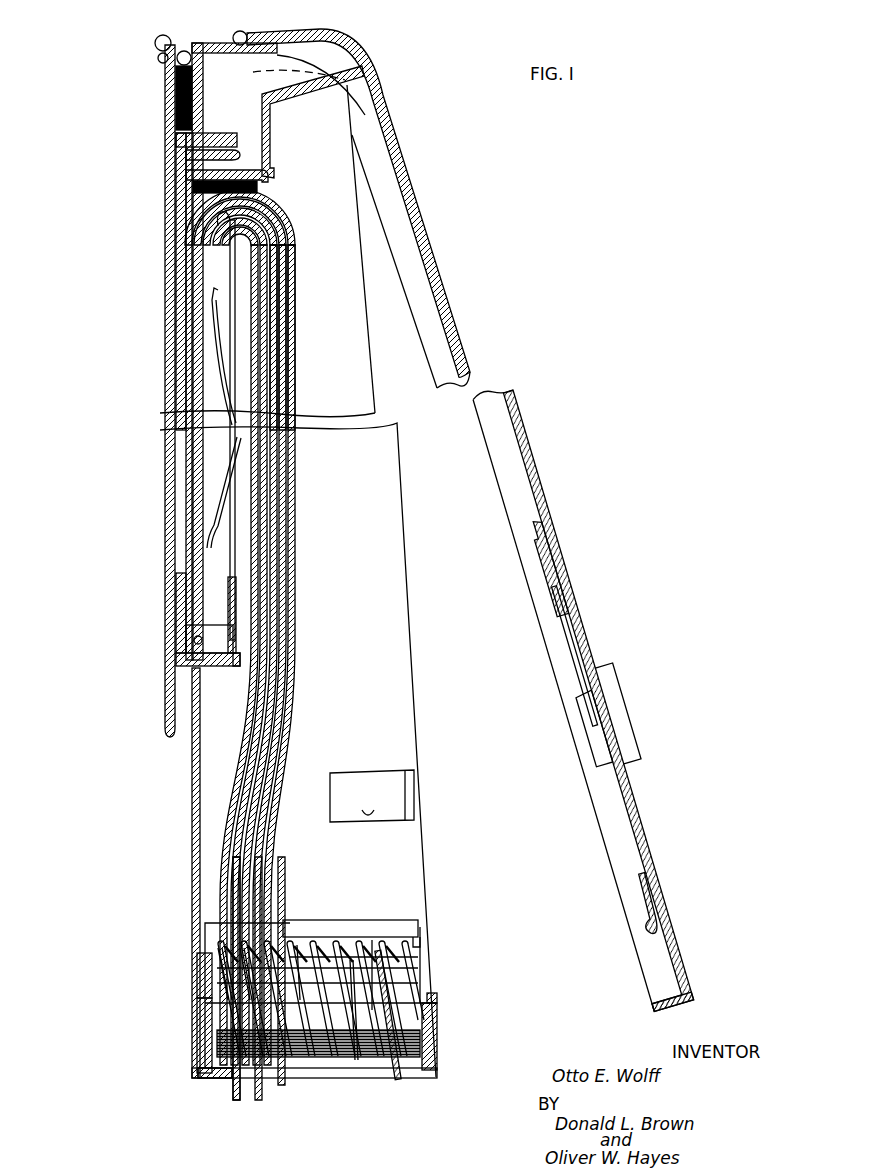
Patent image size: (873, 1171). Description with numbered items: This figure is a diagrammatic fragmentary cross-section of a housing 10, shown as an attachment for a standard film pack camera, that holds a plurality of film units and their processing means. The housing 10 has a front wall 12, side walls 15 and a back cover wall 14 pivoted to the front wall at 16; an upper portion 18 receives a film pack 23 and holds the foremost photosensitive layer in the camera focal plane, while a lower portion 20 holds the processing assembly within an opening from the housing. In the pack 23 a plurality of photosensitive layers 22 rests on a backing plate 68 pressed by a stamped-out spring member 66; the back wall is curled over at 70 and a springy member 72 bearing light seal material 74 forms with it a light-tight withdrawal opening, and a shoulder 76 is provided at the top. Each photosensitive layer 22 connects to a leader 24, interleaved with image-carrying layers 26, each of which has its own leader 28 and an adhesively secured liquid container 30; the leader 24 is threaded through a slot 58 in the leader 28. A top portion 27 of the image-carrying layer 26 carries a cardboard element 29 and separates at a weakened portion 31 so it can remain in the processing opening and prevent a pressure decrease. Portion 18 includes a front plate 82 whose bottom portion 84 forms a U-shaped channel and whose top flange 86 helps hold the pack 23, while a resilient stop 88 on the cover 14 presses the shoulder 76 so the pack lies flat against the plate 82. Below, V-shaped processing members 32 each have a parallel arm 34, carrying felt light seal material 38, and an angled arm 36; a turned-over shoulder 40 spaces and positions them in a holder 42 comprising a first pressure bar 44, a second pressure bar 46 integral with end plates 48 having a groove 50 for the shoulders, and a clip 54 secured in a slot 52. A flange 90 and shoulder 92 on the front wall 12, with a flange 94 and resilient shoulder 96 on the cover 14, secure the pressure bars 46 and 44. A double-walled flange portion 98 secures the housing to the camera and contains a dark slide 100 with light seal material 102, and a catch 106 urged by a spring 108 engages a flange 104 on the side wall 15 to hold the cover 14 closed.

The housing 10 is at (190, 853).
The front wall 12 is at (196, 820).
The back cover wall 14 is at (418, 208).
The side wall 15 is at (413, 683).
The pivot 16 is at (242, 31).
The film pack receiving portion 18 is at (233, 670).
The processing means holding portion 20 is at (216, 1080).
The photosensitive layers 22 is at (198, 478).
The film pack 23 is at (190, 640).
The leader 24 is at (250, 265).
The image-carrying layer 26 is at (266, 748).
The top portion 27 is at (296, 285).
The leader 28 is at (233, 1100).
The element 29 is at (284, 226).
The container 30 is at (266, 880).
The weakened portion 31 is at (292, 340).
The processing member 32 is at (326, 938).
The arm 34 is at (358, 1060).
The arm 36 is at (372, 940).
The light seal material 38 is at (285, 1082).
The shoulder 40 is at (297, 945).
The holder 42 is at (438, 996).
The first pressure bar 44 is at (428, 1040).
The second pressure bar 46 is at (207, 1020).
The end plate 48 is at (420, 975).
The groove 50 is at (420, 942).
The slot 52 is at (320, 1060).
The clip 54 is at (410, 922).
The slot 58 is at (238, 985).
The spring member 66 is at (222, 513).
The backing plate 68 is at (212, 383).
The curled portion 70 is at (272, 210).
The springy member 72 is at (270, 178).
The light seal material 74 is at (176, 180).
The shoulder 76 is at (240, 155).
The front plate 82 is at (178, 606).
The bottom portion 84 is at (227, 673).
The top flange 86 is at (233, 134).
The resilient stop 88 is at (274, 128).
The flange 90 is at (210, 1073).
The shoulder 92 is at (200, 972).
The flange 94 is at (674, 1008).
The resilient shoulder 96 is at (650, 925).
The double-walled flange portion 98 is at (166, 732).
The dark slide 100 is at (160, 36).
The light seal material 102 is at (184, 51).
The engaging flange 104 is at (408, 797).
The catch 106 is at (592, 750).
The spring 108 is at (574, 655).